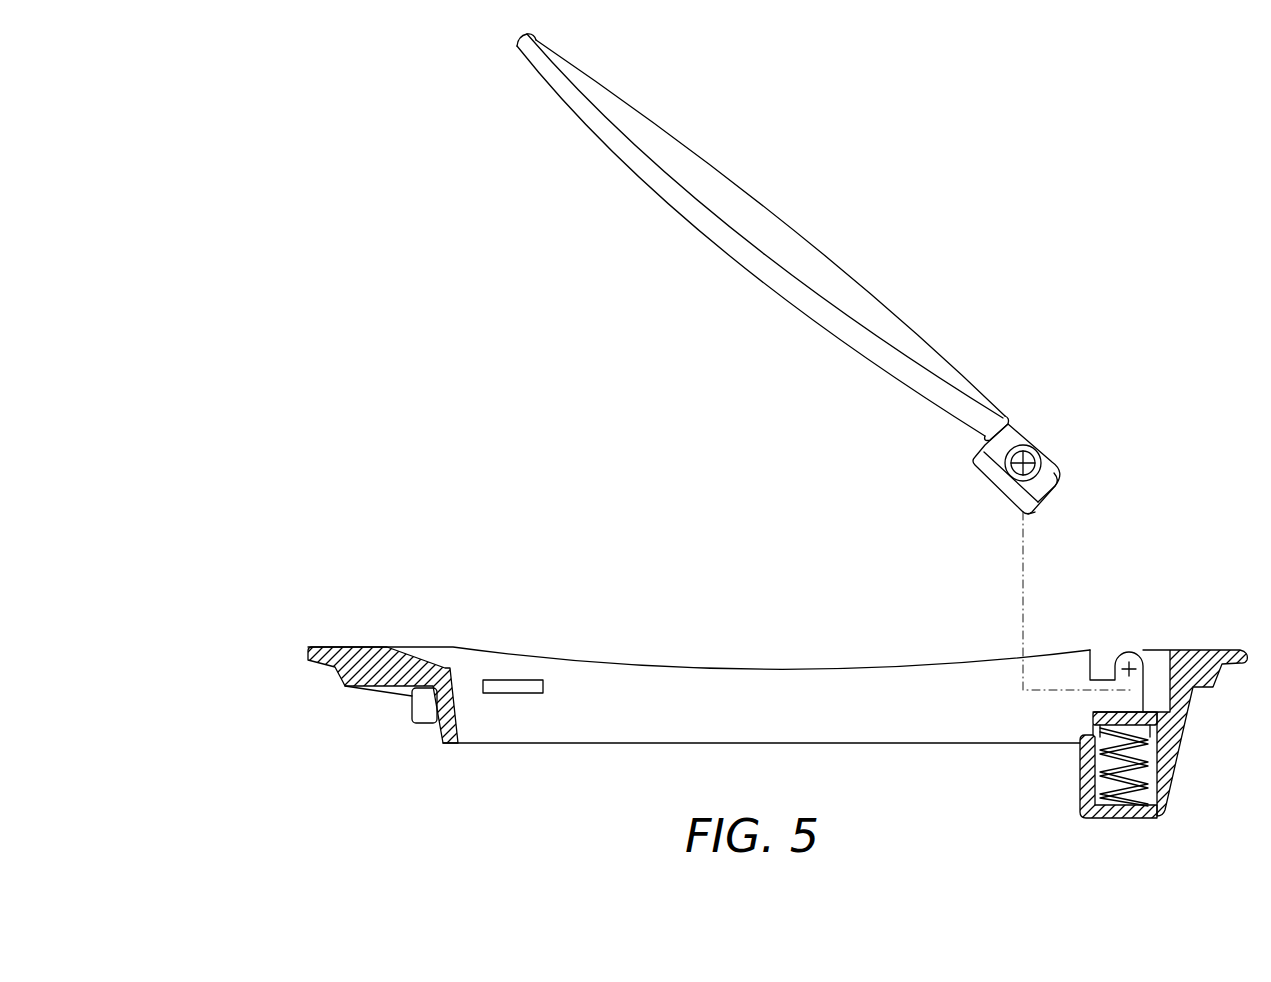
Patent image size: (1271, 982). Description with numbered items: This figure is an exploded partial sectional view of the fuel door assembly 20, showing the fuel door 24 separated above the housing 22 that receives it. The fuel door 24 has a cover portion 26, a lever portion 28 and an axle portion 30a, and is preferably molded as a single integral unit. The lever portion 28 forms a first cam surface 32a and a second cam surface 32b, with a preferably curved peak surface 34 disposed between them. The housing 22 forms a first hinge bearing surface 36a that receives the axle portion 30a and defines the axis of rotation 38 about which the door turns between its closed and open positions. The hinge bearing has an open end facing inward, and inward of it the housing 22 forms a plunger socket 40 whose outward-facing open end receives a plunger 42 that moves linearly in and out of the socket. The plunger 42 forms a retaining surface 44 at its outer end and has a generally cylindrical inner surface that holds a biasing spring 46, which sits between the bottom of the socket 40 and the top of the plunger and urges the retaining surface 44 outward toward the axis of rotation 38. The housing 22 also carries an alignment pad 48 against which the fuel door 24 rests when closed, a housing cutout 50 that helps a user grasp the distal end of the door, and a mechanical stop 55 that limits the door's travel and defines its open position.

The fuel door assembly 20 is at (428, 397).
The housing 22 is at (782, 724).
The fuel door 24 is at (512, 45).
The cover portion 26 is at (722, 237).
The lever portion 28 is at (1007, 464).
The axle portion 30a is at (1035, 447).
The first cam surface 32a is at (998, 487).
The second cam surface 32b is at (1047, 503).
The peak surface 34 is at (1037, 513).
The first hinge bearing surface 36a is at (1127, 655).
The axis of rotation 38 is at (1133, 677).
The plunger socket 40 is at (1160, 793).
The plunger 42 is at (1090, 723).
The retaining surface 44 is at (1110, 712).
The biasing spring 46 is at (1103, 783).
The alignment pad 48 is at (503, 678).
The housing cutout 50 is at (425, 655).
The mechanical stop 55 is at (1187, 645).